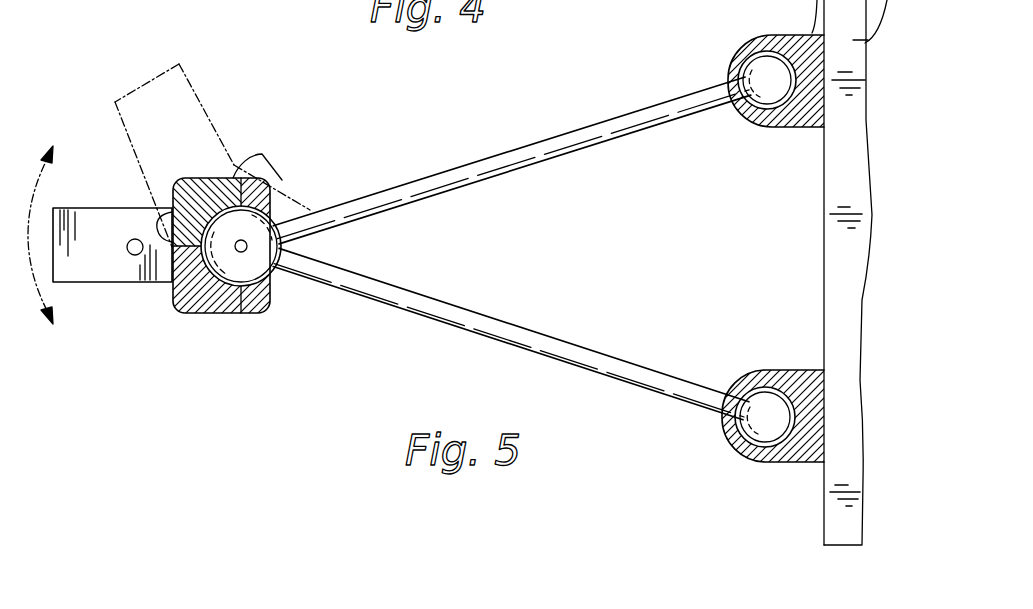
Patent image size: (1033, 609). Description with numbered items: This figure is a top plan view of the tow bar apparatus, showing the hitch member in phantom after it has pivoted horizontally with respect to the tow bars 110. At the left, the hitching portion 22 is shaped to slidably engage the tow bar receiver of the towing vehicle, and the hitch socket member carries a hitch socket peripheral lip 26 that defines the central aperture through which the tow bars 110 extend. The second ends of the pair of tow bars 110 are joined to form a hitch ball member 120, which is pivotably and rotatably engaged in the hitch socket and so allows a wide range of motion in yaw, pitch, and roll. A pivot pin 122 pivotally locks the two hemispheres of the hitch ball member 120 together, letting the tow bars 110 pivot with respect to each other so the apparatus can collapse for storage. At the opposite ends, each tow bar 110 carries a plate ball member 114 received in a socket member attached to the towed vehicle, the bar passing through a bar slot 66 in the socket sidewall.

The hitching portion 22 is at (100, 215).
The hitch socket peripheral lip 26 is at (263, 180).
The bar slot 66 is at (717, 83).
The tow bars 110 is at (559, 133).
The plate ball member 114 is at (784, 50).
The hitch ball member 120 is at (292, 198).
The pivot pin 122 is at (244, 251).